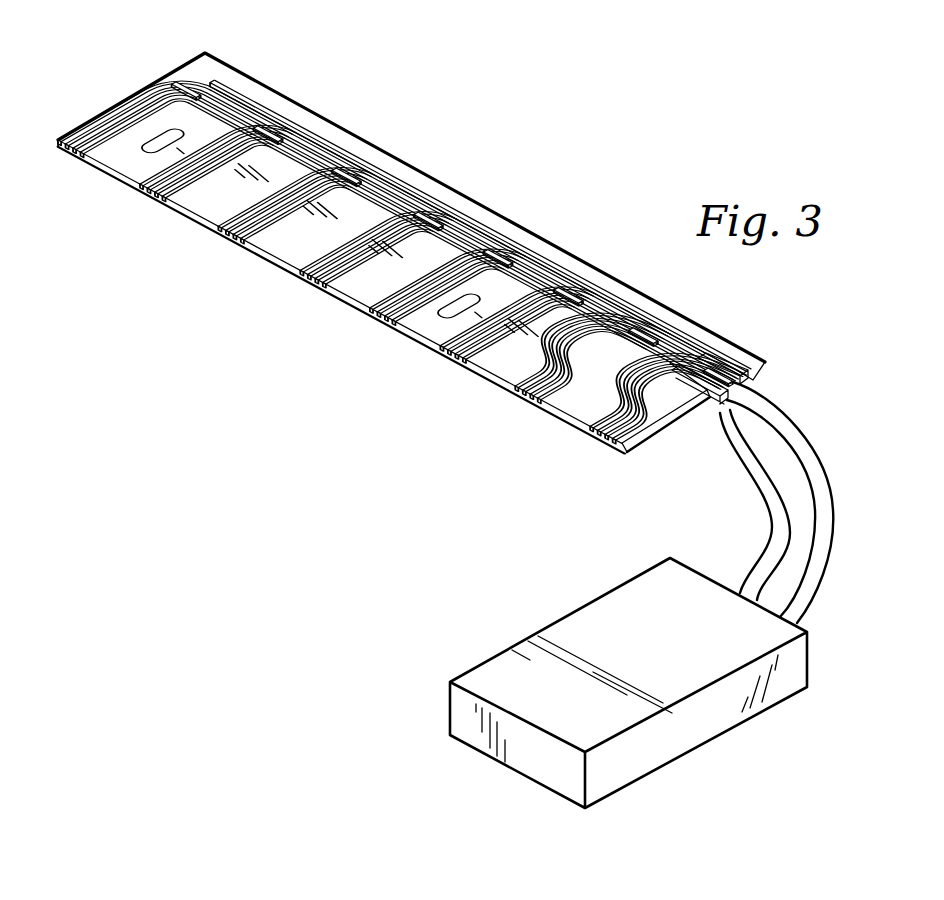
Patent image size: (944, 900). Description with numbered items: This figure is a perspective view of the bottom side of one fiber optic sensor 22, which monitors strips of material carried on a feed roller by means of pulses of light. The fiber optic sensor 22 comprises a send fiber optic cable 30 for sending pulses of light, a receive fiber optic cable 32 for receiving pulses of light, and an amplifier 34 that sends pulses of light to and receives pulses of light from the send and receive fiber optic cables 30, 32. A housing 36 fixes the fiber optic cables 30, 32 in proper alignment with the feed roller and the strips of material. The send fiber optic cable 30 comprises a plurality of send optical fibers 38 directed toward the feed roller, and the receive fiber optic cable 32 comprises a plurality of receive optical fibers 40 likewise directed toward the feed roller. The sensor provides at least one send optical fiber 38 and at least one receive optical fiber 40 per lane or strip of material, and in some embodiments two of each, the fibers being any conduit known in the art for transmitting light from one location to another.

The fiber optic sensor 22 is at (407, 263).
The send fiber optic cable 30 is at (737, 467).
The receive fiber optic cable 32 is at (797, 443).
The amplifier 34 is at (622, 618).
The housing 36 is at (193, 72).
The send optical fibers 38 is at (628, 461).
The receive optical fibers 40 is at (597, 412).